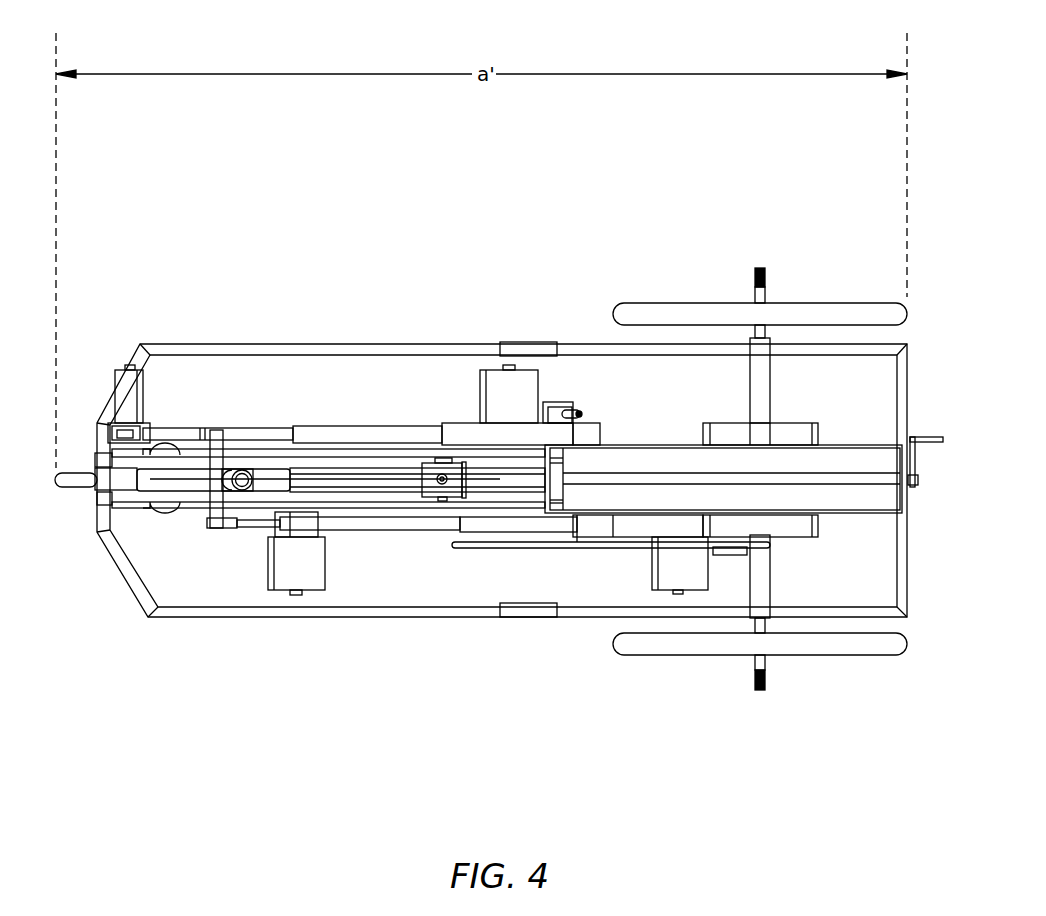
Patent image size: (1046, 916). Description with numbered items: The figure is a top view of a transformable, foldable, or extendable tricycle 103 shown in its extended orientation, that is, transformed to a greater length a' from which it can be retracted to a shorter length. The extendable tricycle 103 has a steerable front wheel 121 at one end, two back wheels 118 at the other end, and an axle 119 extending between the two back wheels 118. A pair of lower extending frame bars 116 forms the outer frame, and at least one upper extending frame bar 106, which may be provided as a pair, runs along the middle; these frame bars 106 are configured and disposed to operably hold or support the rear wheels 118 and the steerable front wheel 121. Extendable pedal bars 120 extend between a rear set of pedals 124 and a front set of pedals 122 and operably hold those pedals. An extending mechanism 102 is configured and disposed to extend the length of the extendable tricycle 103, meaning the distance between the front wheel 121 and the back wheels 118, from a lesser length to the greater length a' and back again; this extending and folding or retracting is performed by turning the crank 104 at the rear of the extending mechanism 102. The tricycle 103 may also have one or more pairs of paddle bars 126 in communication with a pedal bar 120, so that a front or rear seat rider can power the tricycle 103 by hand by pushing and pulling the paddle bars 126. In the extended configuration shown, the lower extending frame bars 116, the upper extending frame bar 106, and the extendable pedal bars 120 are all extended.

The extending mechanism 102 is at (885, 515).
The extendable tricycle 103 is at (553, 292).
The crank 104 is at (925, 437).
The extendable frame bar 106 is at (405, 495).
The lower extending frame bar 116 is at (424, 352).
The back wheel 118 is at (830, 645).
The axle 119 is at (765, 370).
The extendable pedal bar 120 is at (315, 433).
The front wheel 121 is at (85, 480).
The front set of pedals 122 is at (288, 578).
The rear set of pedals 124 is at (695, 580).
The paddle bar 126 is at (584, 413).